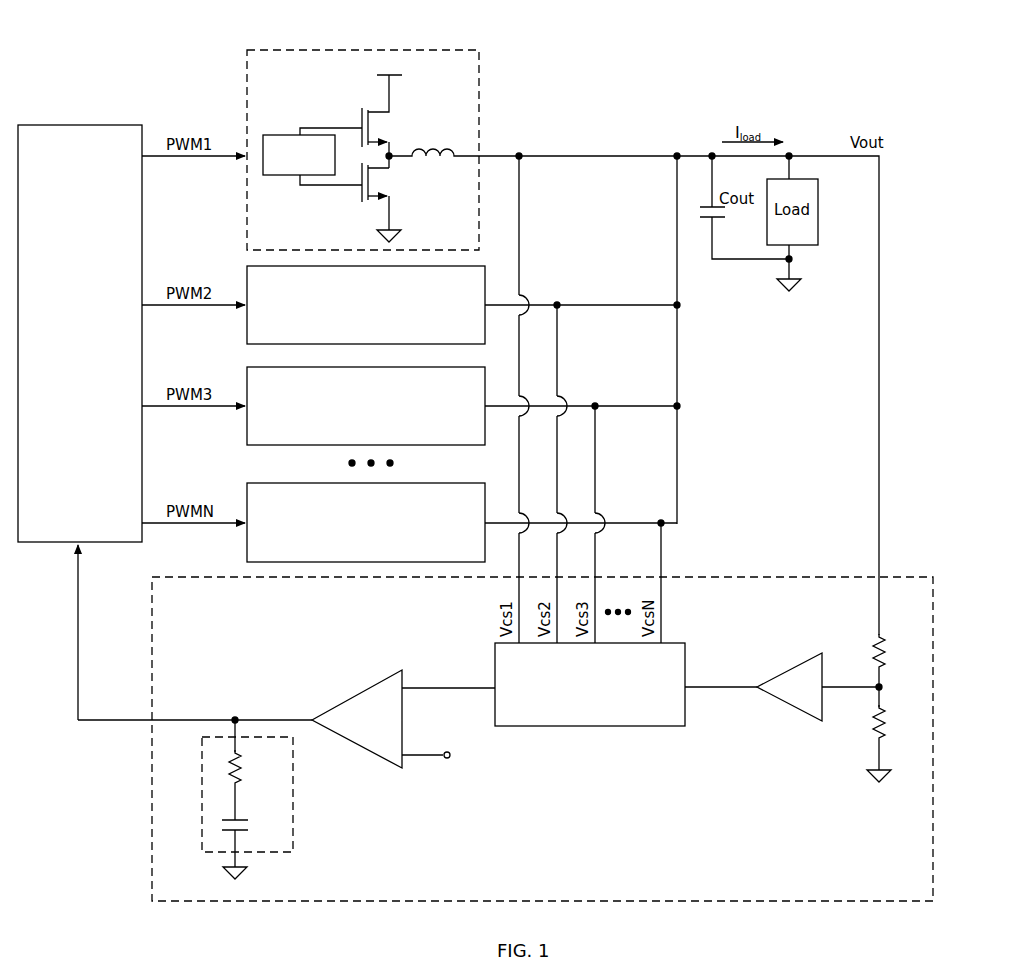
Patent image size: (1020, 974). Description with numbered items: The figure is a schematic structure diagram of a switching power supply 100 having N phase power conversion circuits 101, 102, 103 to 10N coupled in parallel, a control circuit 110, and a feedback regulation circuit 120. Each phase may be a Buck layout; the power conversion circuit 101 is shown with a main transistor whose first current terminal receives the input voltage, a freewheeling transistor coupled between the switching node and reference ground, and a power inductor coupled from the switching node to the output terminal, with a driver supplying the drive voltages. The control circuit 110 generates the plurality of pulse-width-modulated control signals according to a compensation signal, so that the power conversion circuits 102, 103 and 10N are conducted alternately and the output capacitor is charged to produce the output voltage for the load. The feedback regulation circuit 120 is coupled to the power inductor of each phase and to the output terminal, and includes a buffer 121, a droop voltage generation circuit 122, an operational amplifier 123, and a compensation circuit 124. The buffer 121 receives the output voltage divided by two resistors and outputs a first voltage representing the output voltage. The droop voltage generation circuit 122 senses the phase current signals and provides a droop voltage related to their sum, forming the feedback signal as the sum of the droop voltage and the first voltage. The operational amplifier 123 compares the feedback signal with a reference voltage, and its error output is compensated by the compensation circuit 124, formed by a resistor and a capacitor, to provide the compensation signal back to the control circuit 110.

The switching power supply 100 is at (130, 48).
The power conversion circuit 101 is at (383, 150).
The power conversion circuit 102 is at (462, 305).
The power conversion circuit 103 is at (462, 406).
The power conversion circuit 10N is at (462, 522).
The control circuit 110 is at (80, 333).
The feedback regulation circuit 120 is at (505, 723).
The buffer 121 is at (792, 677).
The droop voltage generation circuit 122 is at (590, 684).
The operational amplifier 123 is at (359, 702).
The compensation circuit 124 is at (288, 812).